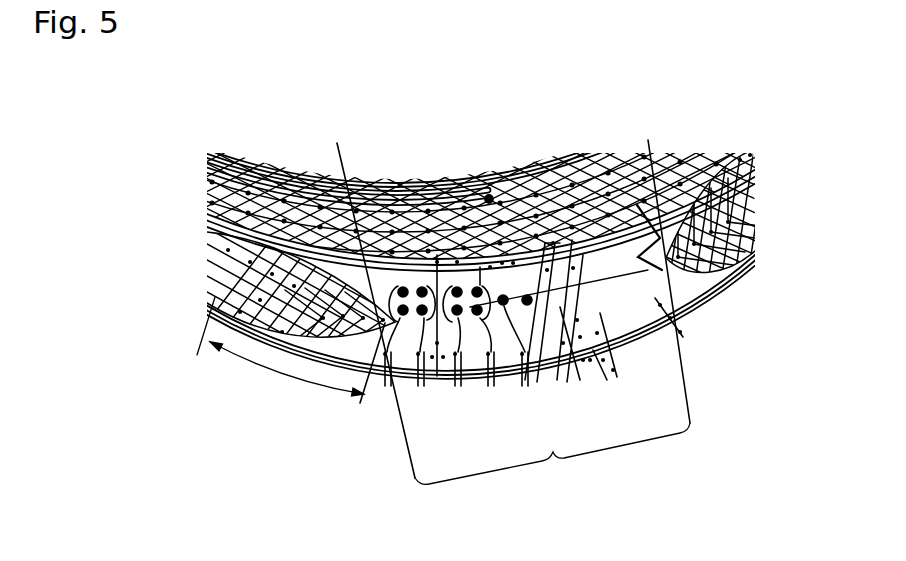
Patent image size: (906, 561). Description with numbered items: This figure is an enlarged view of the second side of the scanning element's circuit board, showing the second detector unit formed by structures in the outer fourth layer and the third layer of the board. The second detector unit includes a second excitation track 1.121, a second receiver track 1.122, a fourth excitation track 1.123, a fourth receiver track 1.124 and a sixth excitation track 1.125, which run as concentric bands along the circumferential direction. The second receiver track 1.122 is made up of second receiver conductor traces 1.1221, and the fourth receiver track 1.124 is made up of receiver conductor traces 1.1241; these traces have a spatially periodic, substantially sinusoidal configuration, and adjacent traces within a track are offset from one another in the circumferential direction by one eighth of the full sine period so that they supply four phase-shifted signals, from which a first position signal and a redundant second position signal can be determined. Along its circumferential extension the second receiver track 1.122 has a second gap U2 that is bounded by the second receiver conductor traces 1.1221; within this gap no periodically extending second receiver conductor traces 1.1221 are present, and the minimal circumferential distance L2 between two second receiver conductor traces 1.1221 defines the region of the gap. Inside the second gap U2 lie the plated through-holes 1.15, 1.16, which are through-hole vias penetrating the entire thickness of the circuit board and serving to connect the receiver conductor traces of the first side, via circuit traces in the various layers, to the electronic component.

The second excitation track 1.121 is at (207, 304).
The second receiver track 1.122 is at (207, 251).
The fourth excitation track 1.123 is at (207, 210).
The fourth receiver track 1.124 is at (207, 155).
The sixth excitation track 1.125 is at (420, 190).
The second receiver conductor traces 1.1221 is at (702, 330).
The receiver conductor traces of the fourth receiver track 1.1241 is at (502, 178).
The plated through-hole 1.15 is at (505, 306).
The plated through-hole 1.16 is at (478, 318).
The minimal distance L2 is at (559, 292).
The second gap U2 is at (552, 465).